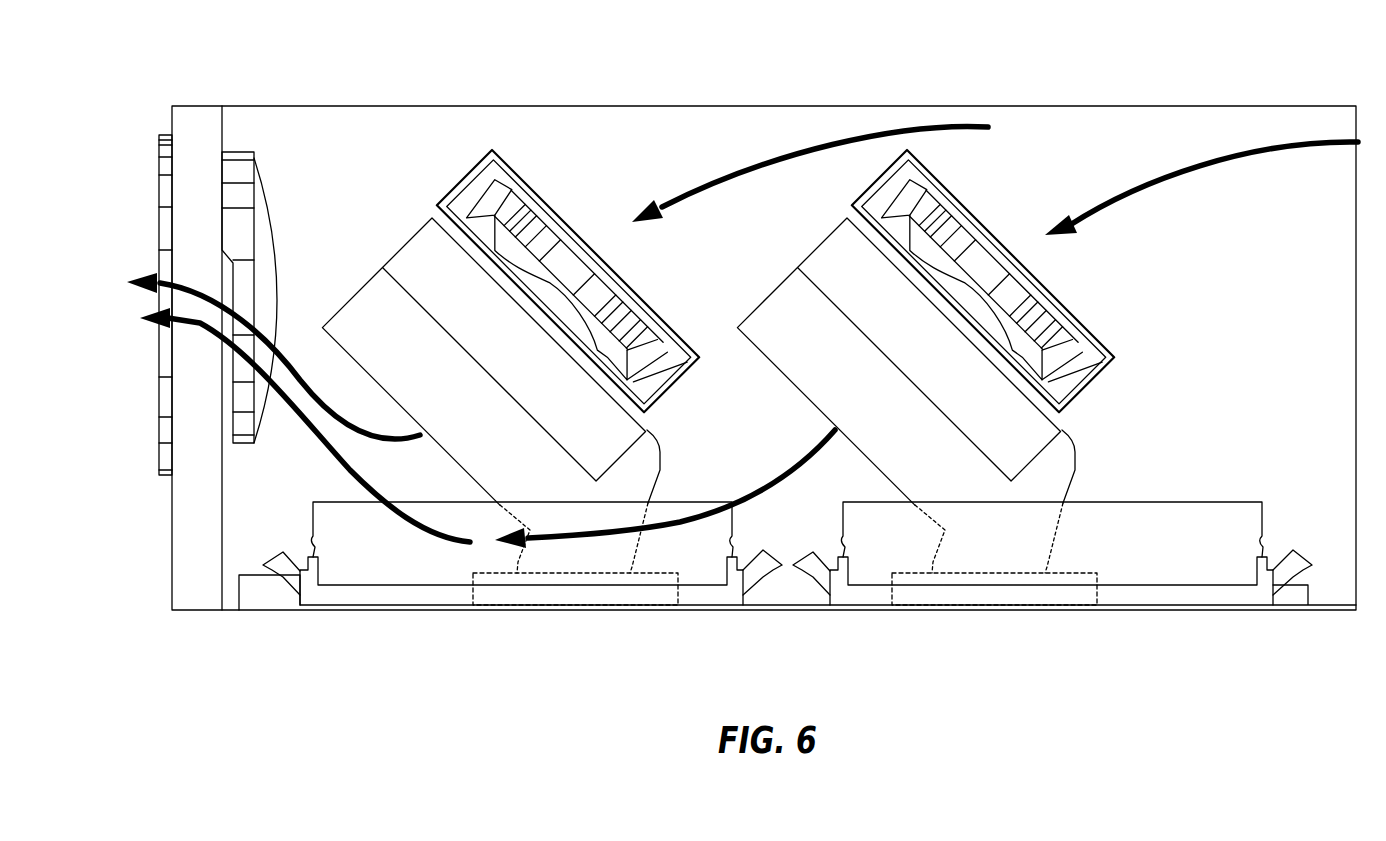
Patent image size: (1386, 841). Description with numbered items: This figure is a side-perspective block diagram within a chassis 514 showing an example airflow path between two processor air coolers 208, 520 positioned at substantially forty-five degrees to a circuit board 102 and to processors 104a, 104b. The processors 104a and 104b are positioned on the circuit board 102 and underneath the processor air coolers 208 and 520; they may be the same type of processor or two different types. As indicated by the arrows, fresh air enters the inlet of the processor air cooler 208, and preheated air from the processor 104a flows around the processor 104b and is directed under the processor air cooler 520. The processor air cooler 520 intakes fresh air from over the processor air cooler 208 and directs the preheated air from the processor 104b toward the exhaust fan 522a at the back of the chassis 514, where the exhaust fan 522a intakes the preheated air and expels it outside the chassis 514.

The chassis 514 is at (311, 93).
The processor air cooler 520 is at (542, 172).
The processor air cooler 208 is at (849, 177).
The exhaust fan 522a is at (243, 230).
The processor 104b is at (582, 593).
The processor 104a is at (1023, 593).
The circuit board 102 is at (1288, 593).